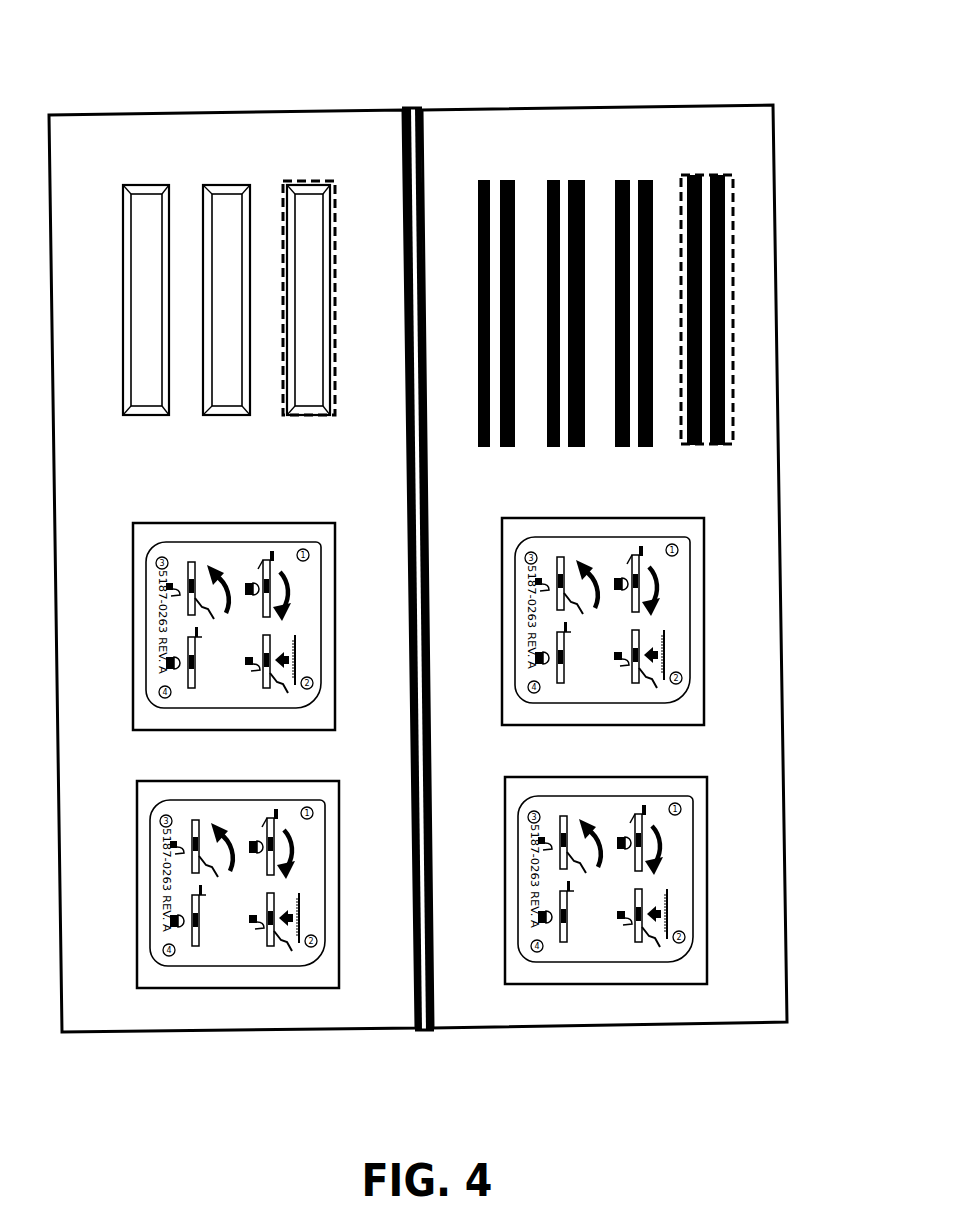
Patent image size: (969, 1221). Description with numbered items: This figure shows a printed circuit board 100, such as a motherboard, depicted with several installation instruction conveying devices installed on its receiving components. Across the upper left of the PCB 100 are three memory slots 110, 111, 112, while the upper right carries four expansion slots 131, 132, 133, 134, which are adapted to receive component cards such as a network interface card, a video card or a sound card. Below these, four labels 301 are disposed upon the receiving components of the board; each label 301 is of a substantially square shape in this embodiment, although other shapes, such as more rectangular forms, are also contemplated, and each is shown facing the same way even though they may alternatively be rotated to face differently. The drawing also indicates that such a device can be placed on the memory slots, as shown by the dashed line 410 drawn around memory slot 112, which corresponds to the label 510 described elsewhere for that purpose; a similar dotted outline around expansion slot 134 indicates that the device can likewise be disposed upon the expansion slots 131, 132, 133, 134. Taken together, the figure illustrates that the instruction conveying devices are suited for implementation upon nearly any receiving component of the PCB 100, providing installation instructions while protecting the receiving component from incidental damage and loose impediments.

The PCB 100 is at (436, 50).
The memory slot 110 is at (148, 418).
The memory slot 111 is at (230, 418).
The memory slot 112 is at (308, 418).
The dashed line 410 is at (335, 230).
The expansion slot 131 is at (500, 447).
The expansion slot 132 is at (567, 447).
The expansion slot 133 is at (638, 447).
The expansion slot 134 is at (710, 445).
The label 510 is at (730, 250).
The label 301 is at (220, 672).